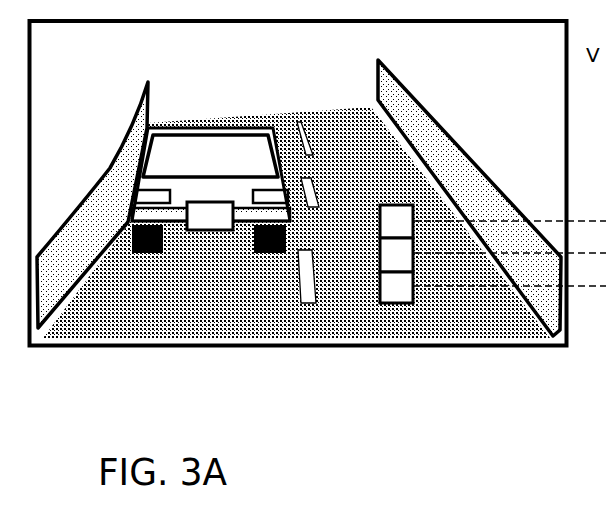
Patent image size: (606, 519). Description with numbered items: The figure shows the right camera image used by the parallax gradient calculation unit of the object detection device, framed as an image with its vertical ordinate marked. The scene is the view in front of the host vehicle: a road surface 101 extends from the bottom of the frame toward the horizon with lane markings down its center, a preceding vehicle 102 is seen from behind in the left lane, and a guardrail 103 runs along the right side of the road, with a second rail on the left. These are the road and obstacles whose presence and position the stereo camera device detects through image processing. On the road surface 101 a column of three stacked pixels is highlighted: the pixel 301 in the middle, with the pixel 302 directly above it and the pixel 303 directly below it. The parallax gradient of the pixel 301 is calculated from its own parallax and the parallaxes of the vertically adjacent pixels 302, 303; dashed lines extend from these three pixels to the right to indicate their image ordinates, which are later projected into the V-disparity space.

The road surface 101 is at (333, 307).
The preceding vehicle 102 is at (210, 226).
The guardrail 103 is at (475, 187).
The pixel 301 is at (395, 258).
The pixel 302 is at (395, 225).
The pixel 303 is at (395, 294).